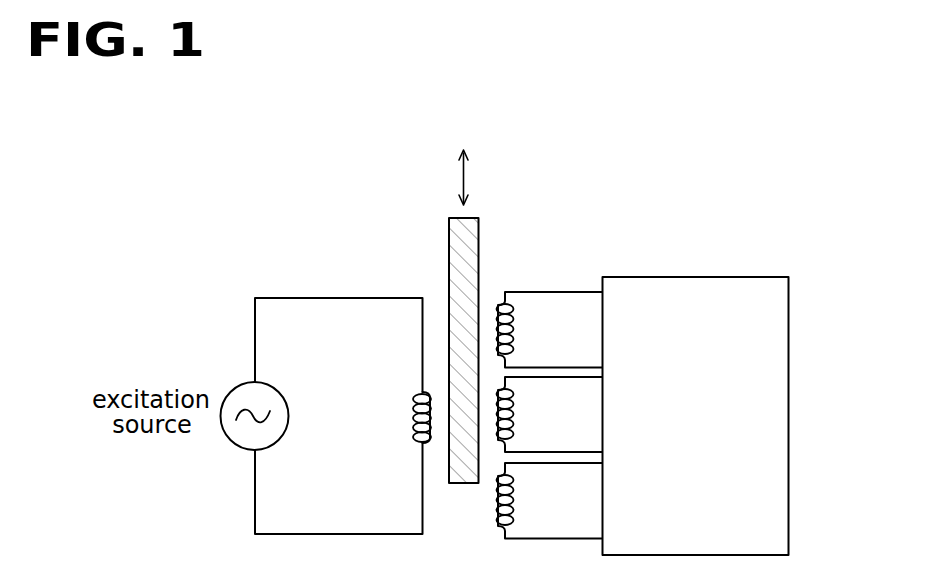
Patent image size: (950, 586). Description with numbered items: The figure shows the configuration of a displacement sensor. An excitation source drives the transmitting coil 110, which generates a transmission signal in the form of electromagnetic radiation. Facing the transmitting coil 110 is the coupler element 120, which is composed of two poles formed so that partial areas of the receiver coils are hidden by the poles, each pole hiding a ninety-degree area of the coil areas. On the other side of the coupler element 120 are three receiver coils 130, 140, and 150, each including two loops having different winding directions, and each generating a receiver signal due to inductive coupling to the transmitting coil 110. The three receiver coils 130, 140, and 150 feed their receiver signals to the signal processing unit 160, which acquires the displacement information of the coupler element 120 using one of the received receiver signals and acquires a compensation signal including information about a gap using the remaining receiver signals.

The transmitting coil 110 is at (419, 394).
The coupler element 120 is at (448, 233).
The receiver coil 130 is at (513, 324).
The receiver coil 140 is at (513, 409).
The receiver coil 150 is at (513, 494).
The signal processing unit 160 is at (789, 414).